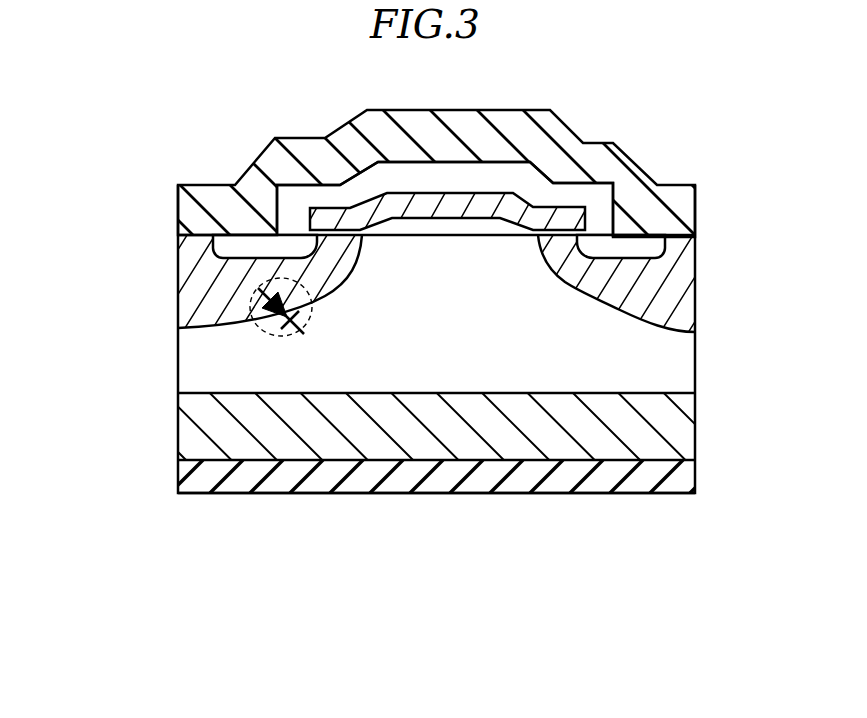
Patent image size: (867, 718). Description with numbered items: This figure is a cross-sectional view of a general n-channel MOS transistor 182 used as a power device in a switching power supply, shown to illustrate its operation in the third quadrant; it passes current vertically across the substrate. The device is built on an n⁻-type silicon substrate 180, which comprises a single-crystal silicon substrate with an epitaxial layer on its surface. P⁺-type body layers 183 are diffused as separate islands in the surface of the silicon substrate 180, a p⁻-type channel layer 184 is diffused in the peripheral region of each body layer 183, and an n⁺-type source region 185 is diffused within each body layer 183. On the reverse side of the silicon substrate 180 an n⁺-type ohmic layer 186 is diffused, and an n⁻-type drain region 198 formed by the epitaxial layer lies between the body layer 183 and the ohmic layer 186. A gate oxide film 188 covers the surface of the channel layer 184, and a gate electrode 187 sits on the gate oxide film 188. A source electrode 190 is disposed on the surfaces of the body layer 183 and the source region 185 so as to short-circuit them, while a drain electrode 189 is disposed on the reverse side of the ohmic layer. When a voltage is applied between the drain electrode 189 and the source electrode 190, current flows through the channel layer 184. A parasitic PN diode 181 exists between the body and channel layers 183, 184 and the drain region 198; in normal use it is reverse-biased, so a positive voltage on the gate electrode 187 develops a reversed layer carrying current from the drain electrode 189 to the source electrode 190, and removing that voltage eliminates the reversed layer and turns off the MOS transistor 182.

The n⁻-type silicon substrate 180 is at (700, 237).
The parasitic PN diode 181 is at (311, 333).
The MOS transistor 182 is at (218, 65).
The p⁺-type body layer 183 is at (190, 303).
The p⁻-type channel layer 184 is at (343, 255).
The n⁺-type source region 185 is at (195, 245).
The n⁺-type ohmic layer 186 is at (190, 432).
The gate electrode 187 is at (562, 212).
The gate oxide film 188 is at (322, 228).
The drain electrode 189 is at (687, 482).
The source electrode 190 is at (218, 212).
The n⁻-type drain region 198 is at (190, 360).